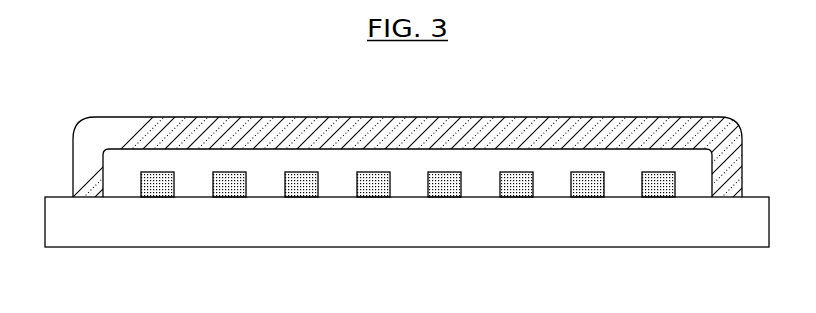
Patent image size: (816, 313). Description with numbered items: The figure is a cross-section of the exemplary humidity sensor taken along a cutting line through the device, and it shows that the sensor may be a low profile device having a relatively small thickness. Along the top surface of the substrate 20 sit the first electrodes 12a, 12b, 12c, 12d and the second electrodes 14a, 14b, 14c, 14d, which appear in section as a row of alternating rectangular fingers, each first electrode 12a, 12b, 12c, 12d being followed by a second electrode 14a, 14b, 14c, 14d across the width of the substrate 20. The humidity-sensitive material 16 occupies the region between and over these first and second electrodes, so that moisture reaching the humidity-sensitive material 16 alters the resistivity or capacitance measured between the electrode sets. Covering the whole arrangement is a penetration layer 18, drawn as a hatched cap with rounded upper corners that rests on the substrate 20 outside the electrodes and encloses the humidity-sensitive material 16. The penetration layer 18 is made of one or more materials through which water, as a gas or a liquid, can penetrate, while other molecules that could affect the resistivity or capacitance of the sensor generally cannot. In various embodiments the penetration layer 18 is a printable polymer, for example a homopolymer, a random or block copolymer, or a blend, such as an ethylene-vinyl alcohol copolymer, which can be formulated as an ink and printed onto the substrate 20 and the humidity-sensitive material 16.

The first electrode 12a is at (157, 197).
The first electrode 12b is at (297, 197).
The first electrode 12c is at (445, 197).
The first electrode 12d is at (588, 197).
The second electrode 14a is at (225, 197).
The second electrode 14b is at (370, 197).
The second electrode 14c is at (517, 197).
The second electrode 14d is at (657, 197).
The humidity-sensitive material 16 is at (118, 183).
The penetration layer 18 is at (637, 117).
The substrate 20 is at (403, 237).